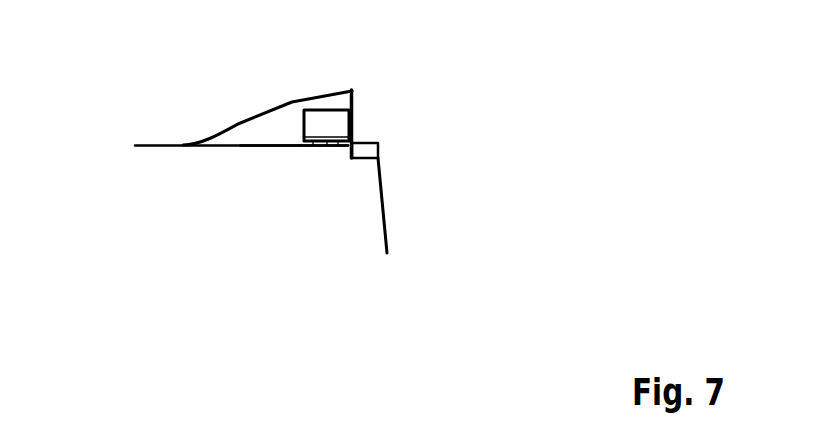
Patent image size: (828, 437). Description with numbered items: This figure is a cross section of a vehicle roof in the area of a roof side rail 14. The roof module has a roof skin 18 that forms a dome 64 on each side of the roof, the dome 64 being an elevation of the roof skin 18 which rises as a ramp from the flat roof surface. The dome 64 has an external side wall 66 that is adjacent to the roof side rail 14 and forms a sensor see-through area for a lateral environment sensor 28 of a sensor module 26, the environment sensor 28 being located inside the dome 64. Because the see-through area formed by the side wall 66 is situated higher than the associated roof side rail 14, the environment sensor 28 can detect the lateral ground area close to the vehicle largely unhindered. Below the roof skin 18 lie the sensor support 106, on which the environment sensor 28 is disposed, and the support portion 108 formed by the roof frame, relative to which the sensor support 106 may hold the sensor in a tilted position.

The roof side rail 14 is at (362, 153).
The roof skin 18 is at (180, 145).
The sensor module 26 is at (323, 130).
The environment sensor 28 is at (306, 84).
The dome 64 is at (342, 90).
The side wall 66 is at (352, 123).
The sensor support 106 is at (328, 147).
The support portion 108 is at (275, 147).